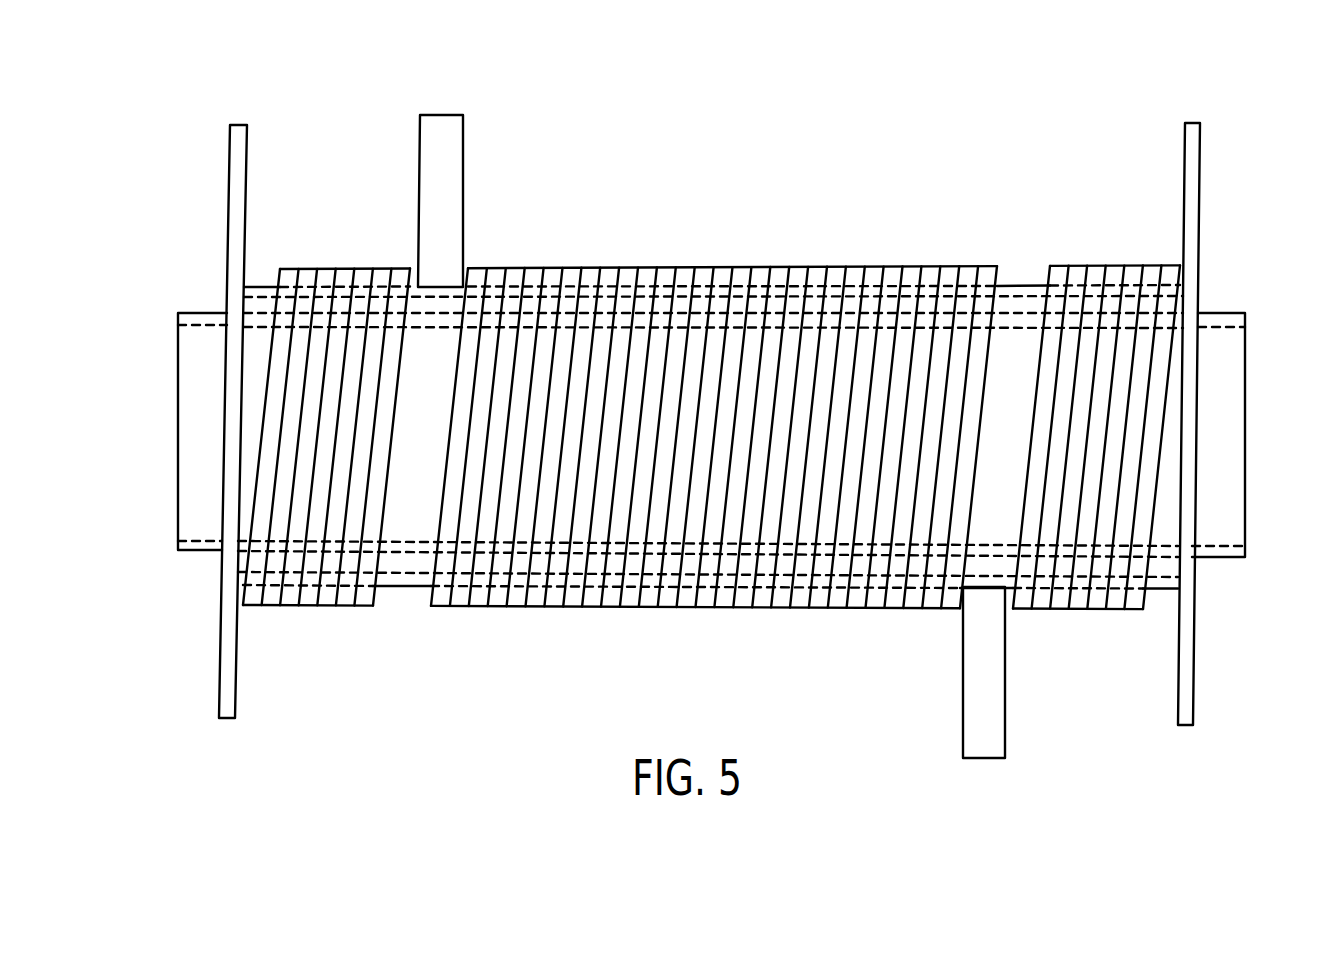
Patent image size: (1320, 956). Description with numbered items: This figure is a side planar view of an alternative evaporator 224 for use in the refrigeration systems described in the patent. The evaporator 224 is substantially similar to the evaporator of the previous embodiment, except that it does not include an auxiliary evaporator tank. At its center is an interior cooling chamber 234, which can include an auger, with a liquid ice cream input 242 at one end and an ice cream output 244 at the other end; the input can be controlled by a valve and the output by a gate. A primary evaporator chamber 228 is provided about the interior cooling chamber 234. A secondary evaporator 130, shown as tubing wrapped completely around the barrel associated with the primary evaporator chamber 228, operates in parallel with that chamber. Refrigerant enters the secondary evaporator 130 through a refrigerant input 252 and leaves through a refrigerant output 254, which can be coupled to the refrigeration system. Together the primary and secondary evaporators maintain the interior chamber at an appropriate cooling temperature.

The secondary evaporator 130 is at (799, 271).
The evaporator 224 is at (744, 436).
The primary evaporator chamber 228 is at (1198, 302).
The interior cooling chamber 234 is at (701, 435).
The liquid ice cream input 242 is at (180, 430).
The ice cream output 244 is at (1230, 438).
The refrigerant input 252 is at (963, 683).
The refrigerant output 254 is at (465, 198).